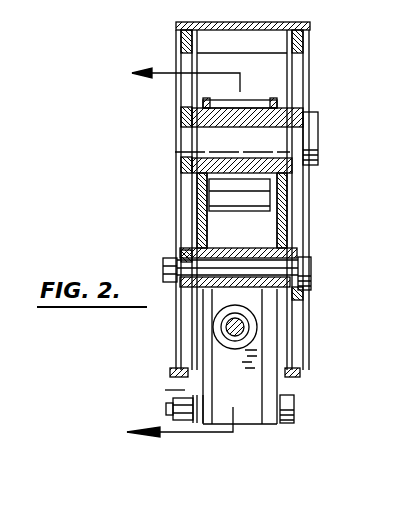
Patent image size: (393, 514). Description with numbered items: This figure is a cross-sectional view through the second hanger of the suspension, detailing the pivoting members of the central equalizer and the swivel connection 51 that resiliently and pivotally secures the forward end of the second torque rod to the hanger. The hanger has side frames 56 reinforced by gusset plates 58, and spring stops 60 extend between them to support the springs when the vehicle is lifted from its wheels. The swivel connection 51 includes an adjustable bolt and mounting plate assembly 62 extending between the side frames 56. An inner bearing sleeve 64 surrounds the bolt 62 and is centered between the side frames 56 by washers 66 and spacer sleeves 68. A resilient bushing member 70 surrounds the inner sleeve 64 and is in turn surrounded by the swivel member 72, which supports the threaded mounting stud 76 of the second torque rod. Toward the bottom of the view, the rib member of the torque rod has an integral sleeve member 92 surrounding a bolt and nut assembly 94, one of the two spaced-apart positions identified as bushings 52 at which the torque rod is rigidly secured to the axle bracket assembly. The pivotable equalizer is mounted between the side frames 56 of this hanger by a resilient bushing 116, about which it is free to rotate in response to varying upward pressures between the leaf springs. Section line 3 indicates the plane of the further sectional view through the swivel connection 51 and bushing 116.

The section line 3- 3 is at (173, 253).
The swivel connection 51 is at (238, 361).
The bushings 52 is at (300, 402).
The side frames 56 is at (190, 190).
The gusset plates 58 is at (180, 93).
The spring stops 60 is at (212, 201).
The adjustable bolt and mounting plate assembly 62 is at (312, 262).
The inner bearing sleeve 64 is at (242, 210).
The washers 66 is at (200, 231).
The spacer sleeves 68 is at (186, 255).
The resilient bushing member 70 is at (215, 308).
The swivel member 72 is at (262, 243).
The mounting stud 76 is at (225, 325).
The sleeve member 92 is at (208, 402).
The bolt and nut assembly 94 is at (168, 405).
The resilient bushing 116 is at (329, 119).